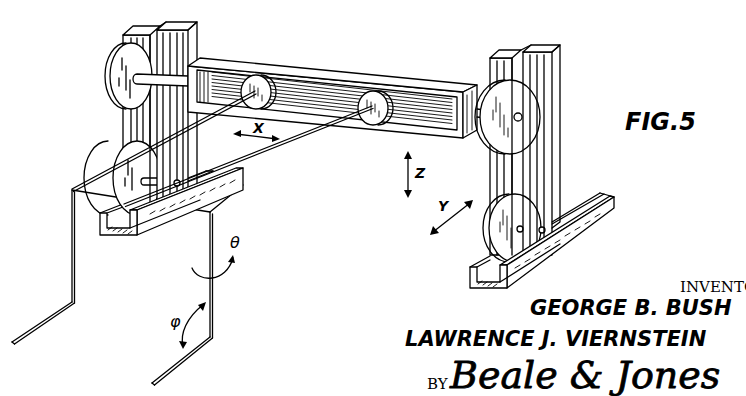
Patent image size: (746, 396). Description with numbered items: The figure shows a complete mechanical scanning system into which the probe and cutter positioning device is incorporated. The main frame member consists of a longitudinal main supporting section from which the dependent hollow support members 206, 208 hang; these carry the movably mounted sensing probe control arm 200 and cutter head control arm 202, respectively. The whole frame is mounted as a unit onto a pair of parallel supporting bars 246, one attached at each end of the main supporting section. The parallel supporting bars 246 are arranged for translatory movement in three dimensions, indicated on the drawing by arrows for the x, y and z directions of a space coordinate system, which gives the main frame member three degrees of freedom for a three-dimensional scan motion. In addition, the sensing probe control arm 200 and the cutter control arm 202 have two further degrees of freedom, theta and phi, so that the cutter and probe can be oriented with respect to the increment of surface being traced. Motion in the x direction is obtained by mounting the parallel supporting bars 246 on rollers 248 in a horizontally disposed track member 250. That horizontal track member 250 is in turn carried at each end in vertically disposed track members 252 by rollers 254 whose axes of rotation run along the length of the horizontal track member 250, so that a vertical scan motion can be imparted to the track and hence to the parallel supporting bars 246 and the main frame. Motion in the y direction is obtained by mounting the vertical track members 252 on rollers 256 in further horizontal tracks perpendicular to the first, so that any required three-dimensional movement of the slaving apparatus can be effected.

The sensing probe control arm 200 is at (30, 331).
The cutter head control arm 202 is at (167, 366).
The dependent hollow support member 206 is at (72, 268).
The dependent hollow support member 208 is at (213, 295).
The parallel supporting bars 246 is at (221, 112).
The rollers 248 is at (257, 87).
The horizontally disposed track member 250 is at (331, 72).
The vertically disposed track members 252 is at (522, 153).
The rollers 254 is at (505, 134).
The rollers 256 is at (505, 234).